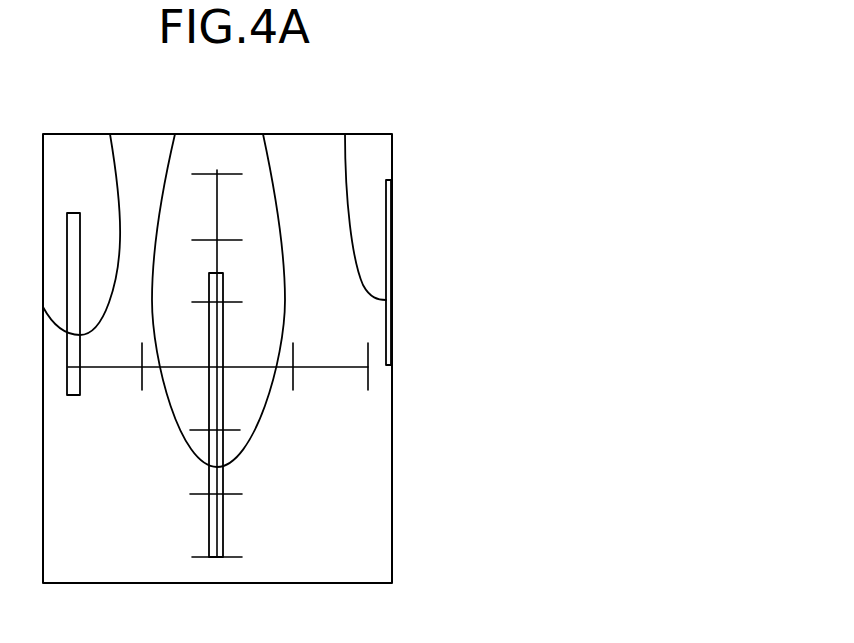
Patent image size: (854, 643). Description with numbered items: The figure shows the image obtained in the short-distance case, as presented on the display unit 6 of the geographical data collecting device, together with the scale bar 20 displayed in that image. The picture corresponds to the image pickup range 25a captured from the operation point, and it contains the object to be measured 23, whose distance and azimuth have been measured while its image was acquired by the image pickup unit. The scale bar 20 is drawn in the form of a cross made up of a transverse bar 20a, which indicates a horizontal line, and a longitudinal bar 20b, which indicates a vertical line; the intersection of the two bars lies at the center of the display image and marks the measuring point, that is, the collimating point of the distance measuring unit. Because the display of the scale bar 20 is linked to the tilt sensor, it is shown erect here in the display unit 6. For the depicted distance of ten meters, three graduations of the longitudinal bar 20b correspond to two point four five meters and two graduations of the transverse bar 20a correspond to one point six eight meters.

The display unit 6 is at (393, 392).
The scale bar 20 is at (218, 171).
The transverse bar 20a is at (328, 367).
The longitudinal bar 20b is at (217, 255).
The object to be measured 23 is at (162, 178).
The image pickup range 25a is at (393, 163).